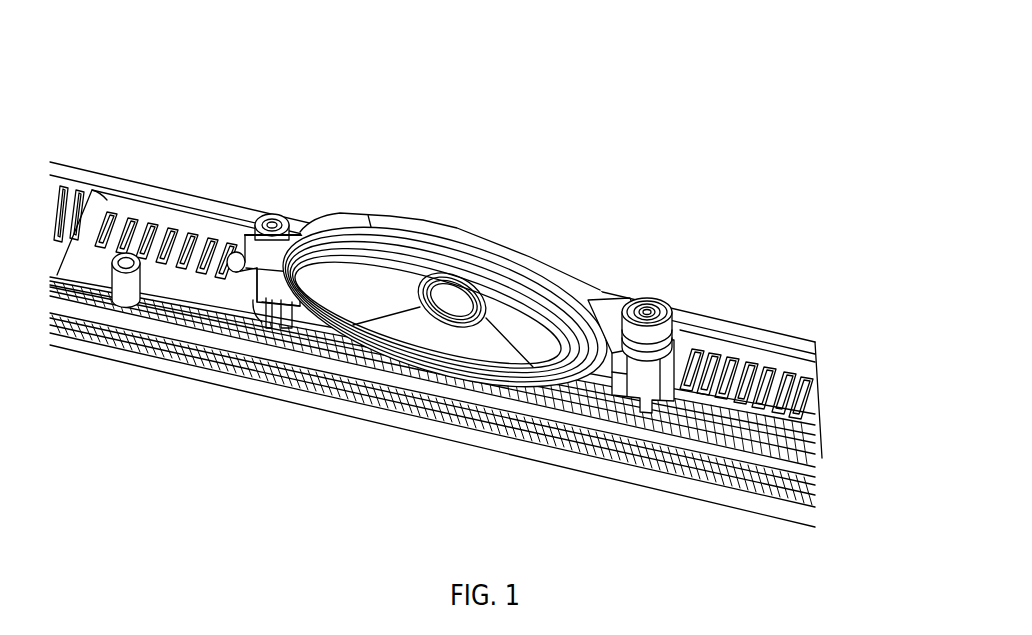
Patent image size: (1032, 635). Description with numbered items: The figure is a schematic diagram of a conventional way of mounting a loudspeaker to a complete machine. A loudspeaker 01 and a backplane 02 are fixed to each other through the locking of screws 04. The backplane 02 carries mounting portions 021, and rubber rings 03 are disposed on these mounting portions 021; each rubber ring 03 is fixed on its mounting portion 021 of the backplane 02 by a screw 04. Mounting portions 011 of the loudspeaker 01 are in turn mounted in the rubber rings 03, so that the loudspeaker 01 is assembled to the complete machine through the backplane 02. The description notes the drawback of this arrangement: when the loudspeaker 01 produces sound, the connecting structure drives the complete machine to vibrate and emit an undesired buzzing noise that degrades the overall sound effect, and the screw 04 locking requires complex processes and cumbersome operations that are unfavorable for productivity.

The loudspeaker 01 is at (383, 283).
The mounting portion of the loudspeaker 011 is at (643, 340).
The backplane 02 is at (102, 221).
The mounting portion of the backplane 021 is at (663, 357).
The rubber ring 03 is at (665, 312).
The screw 04 is at (646, 311).